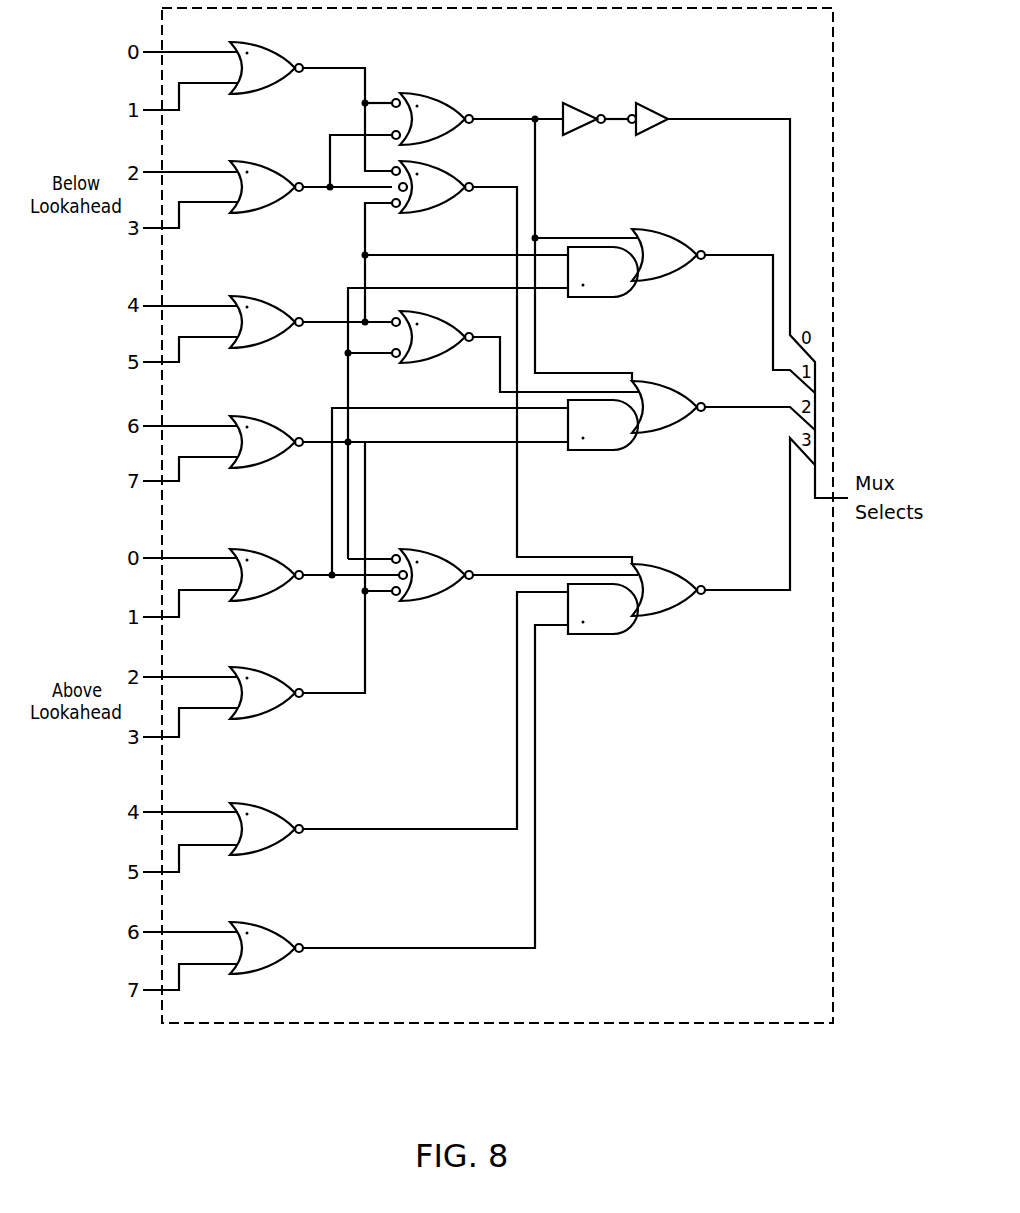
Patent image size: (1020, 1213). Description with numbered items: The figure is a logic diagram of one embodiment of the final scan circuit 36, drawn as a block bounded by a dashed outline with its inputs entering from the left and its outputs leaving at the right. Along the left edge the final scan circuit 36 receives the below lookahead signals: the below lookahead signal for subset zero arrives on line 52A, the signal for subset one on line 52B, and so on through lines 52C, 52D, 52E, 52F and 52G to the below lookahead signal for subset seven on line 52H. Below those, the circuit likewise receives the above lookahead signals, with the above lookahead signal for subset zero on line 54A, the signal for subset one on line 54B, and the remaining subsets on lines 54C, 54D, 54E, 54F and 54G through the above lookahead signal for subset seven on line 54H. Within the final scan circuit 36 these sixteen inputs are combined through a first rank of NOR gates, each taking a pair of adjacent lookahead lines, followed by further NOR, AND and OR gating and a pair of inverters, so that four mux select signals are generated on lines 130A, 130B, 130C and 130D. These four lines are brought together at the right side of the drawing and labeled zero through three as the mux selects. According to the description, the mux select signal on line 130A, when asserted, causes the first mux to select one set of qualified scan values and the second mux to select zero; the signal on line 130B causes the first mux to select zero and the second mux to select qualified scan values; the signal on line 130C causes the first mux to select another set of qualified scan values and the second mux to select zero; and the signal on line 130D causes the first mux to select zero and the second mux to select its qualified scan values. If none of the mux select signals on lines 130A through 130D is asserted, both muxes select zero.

The line 52A is at (197, 52).
The line 52B is at (197, 83).
The line 52C is at (197, 171).
The line 52D is at (197, 202).
The line 52E is at (197, 306).
The line 52F is at (197, 337).
The line 52G is at (197, 426).
The line 52H is at (197, 457).
The line 54A is at (197, 558).
The line 54B is at (197, 590).
The line 54C is at (197, 677).
The line 54D is at (197, 708).
The line 54E is at (197, 812).
The line 54F is at (197, 845).
The line 54G is at (197, 932).
The line 54H is at (197, 964).
The line 130A is at (722, 119).
The line 130B is at (757, 255).
The line 130C is at (757, 407).
The line 130D is at (757, 590).
The final scan circuit 36 is at (808, 1016).